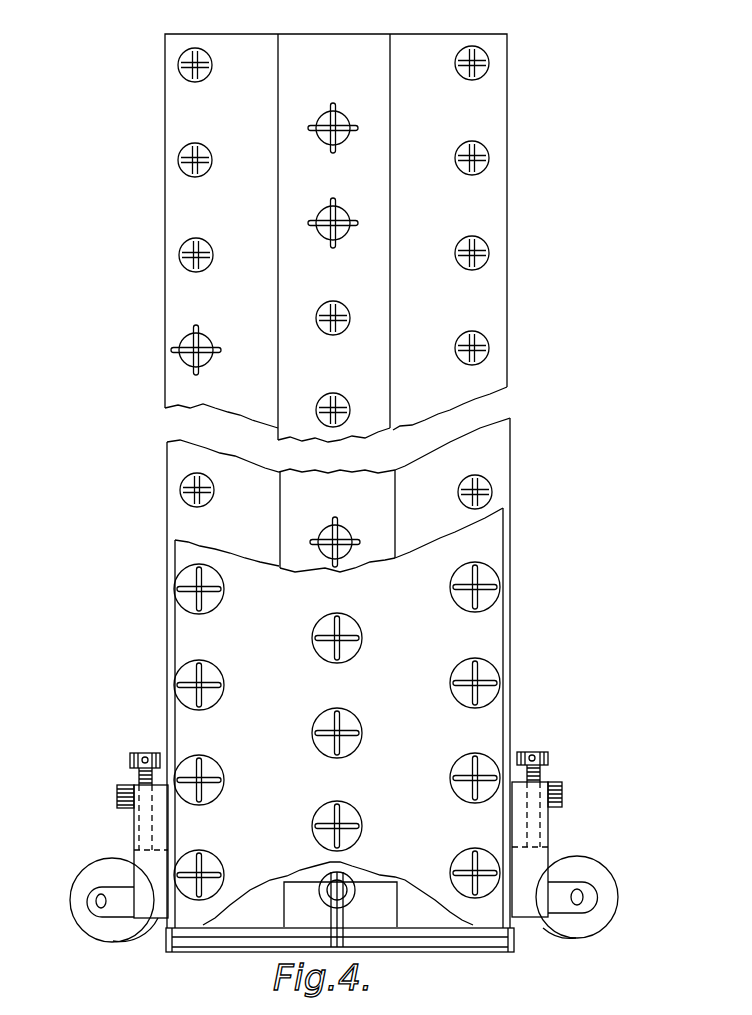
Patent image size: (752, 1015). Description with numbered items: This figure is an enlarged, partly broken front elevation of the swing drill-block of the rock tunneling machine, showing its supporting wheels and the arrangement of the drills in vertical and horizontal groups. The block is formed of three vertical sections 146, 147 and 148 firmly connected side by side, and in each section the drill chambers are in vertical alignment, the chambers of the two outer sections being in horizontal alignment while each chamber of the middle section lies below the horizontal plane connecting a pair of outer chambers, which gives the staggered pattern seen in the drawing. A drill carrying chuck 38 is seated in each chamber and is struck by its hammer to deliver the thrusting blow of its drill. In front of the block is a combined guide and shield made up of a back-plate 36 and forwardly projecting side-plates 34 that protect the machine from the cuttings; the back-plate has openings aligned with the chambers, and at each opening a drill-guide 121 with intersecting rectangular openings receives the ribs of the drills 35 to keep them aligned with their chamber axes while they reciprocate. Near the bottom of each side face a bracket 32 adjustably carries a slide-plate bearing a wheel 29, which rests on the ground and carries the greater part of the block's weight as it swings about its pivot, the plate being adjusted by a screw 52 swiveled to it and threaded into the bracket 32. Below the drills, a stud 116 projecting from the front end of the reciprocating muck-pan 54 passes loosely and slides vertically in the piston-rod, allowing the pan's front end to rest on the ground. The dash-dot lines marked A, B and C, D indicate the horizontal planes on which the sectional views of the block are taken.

The drill carrying chuck 38 is at (188, 77).
The vertical section 146 is at (333, 247).
The vertical section 147 is at (217, 192).
The vertical section 148 is at (446, 205).
The drill 35 is at (190, 356).
The drill-guide 121 is at (487, 577).
The side-plate 34 is at (170, 626).
The back-plate 36 is at (204, 637).
The screw 52 is at (130, 760).
The bracket 32 is at (150, 810).
The wheel 29 is at (105, 937).
The stud 116 is at (343, 933).
The muck-pan 54 is at (340, 956).
The section line A—B A is at (195, 255).
The section line A— B is at (495, 255).
The section line C—D C is at (195, 350).
The section line C— D is at (490, 348).